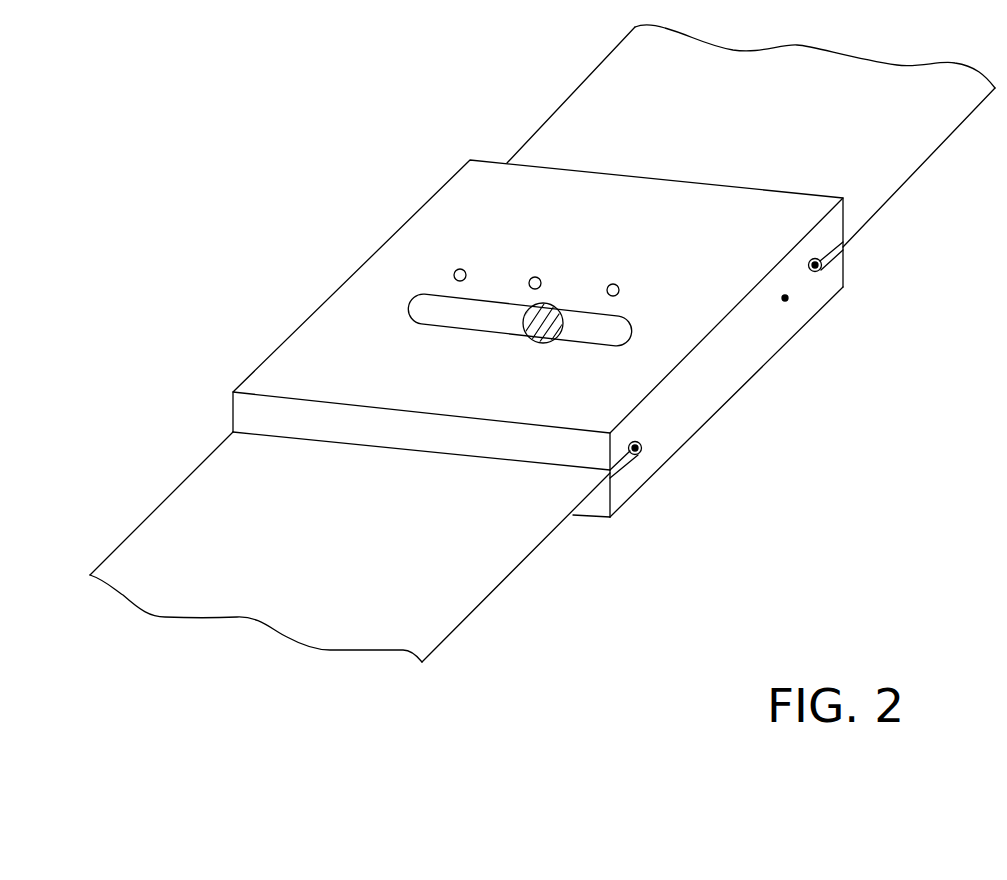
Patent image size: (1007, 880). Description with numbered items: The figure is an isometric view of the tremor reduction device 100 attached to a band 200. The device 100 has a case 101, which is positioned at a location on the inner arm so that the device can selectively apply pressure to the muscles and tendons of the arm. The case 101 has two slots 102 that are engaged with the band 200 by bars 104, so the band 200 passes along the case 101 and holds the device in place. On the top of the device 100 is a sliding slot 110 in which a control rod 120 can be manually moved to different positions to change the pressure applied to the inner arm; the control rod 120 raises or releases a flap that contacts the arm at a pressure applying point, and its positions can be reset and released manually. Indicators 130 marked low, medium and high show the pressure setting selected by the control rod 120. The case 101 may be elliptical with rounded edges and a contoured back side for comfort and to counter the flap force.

The tremor reduction device 100 is at (581, 366).
The case 101 is at (712, 405).
The slots 102 is at (837, 255).
The bars 104 is at (818, 272).
The sliding slot 110 is at (413, 318).
The control rod 120 is at (545, 337).
The indicators 130 is at (648, 259).
The band 200 is at (910, 155).